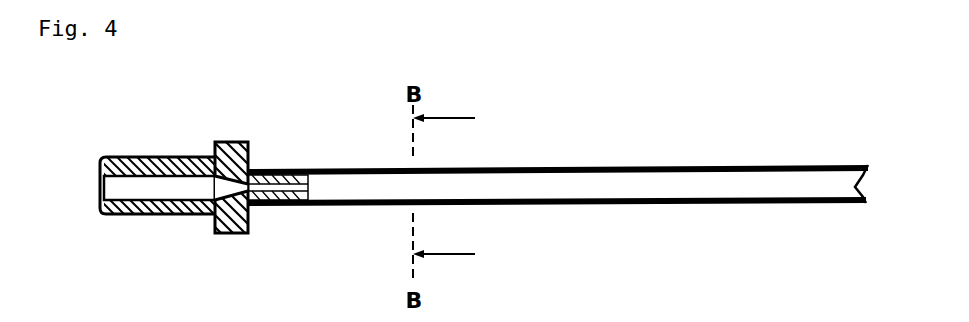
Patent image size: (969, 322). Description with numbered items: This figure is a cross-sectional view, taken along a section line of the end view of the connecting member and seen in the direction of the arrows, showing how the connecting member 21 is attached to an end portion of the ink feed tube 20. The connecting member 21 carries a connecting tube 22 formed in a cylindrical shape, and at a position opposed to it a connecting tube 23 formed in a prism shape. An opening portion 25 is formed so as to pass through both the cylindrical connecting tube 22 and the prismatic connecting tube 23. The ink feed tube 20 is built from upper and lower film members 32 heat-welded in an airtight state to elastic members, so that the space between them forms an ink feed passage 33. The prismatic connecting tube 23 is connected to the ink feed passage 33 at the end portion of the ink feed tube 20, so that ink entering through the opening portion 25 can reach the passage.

The ink feed tube 20 is at (558, 177).
The connecting member 21 is at (230, 142).
The connecting tube 22 is at (128, 216).
The connecting tube 23 is at (287, 168).
The opening portion 25 is at (120, 181).
The film member 32 is at (733, 166).
The ink feed passage 33 is at (602, 189).